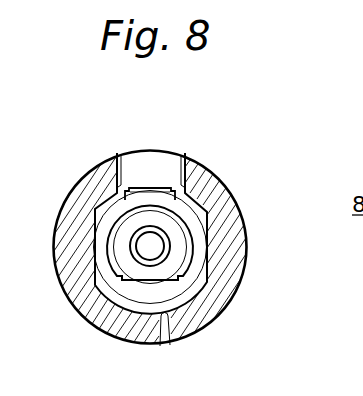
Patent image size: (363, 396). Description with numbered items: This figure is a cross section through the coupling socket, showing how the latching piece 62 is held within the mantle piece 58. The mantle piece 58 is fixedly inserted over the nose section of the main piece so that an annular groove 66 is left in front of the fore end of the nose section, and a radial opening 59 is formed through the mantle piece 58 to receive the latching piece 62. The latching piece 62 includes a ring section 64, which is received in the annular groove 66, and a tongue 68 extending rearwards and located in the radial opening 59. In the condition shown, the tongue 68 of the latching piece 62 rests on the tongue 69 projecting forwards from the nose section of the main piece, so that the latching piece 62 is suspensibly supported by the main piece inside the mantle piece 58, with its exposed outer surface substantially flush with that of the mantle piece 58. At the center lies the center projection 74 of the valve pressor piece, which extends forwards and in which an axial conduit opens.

The mantle piece 58 is at (243, 267).
The radial opening 59 is at (123, 152).
The latching piece 62 is at (185, 282).
The ring section 64 is at (128, 292).
The annular groove 66 is at (165, 318).
The tongue 68 is at (160, 163).
The tongue 69 is at (182, 197).
The center projection 74 is at (157, 243).